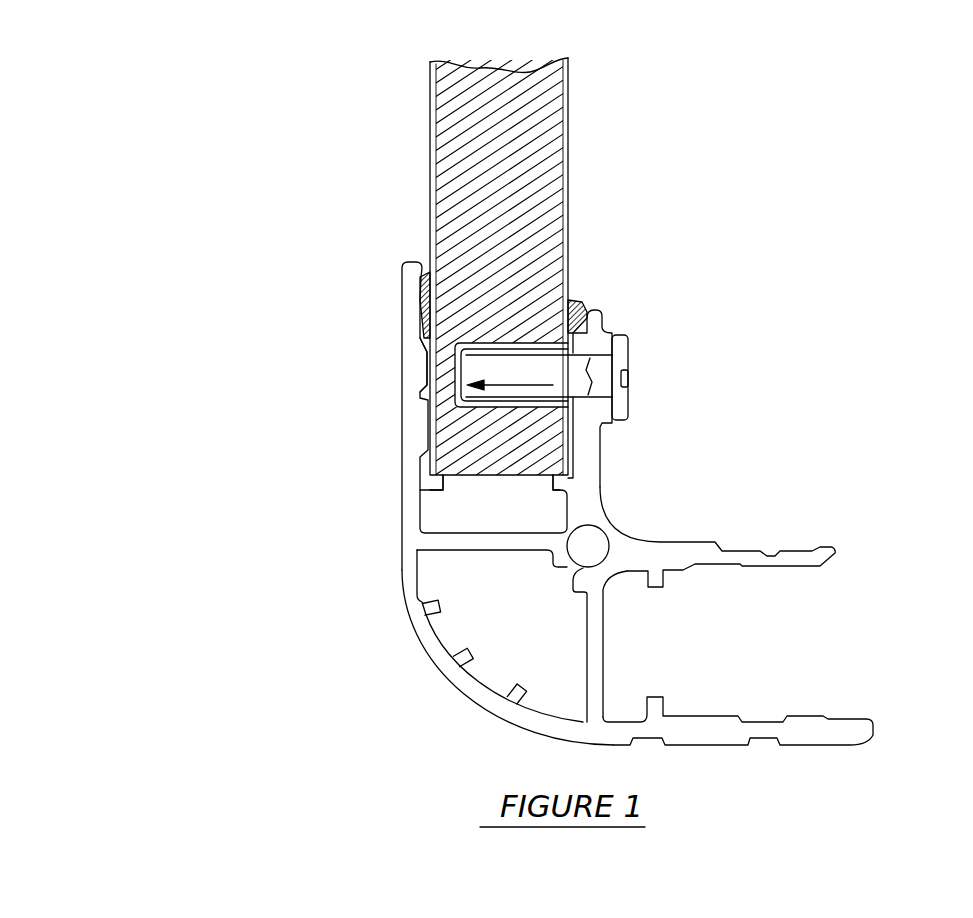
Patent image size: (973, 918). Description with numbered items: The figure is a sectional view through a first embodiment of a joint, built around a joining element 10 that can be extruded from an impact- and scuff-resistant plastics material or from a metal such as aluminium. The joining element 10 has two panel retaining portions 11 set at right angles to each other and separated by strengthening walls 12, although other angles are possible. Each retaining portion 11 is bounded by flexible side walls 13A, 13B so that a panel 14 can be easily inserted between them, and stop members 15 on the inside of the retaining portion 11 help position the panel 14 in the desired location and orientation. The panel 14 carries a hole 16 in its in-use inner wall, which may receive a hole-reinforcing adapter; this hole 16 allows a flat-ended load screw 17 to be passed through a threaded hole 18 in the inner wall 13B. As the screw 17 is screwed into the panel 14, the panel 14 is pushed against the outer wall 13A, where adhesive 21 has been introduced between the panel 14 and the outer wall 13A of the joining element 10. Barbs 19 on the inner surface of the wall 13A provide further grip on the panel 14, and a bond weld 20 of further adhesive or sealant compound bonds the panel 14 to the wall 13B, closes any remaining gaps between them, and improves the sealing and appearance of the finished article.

The joining element 10 is at (382, 670).
The panel retaining portion 11 is at (822, 566).
The strengthening wall 12 is at (602, 673).
The outer wall 13A is at (403, 427).
The inner wall 13B is at (598, 465).
The panel 14 is at (453, 95).
The stop member 15 is at (558, 490).
The hole 16 is at (485, 345).
The load screw 17 is at (630, 350).
The threaded hole 18 is at (590, 352).
The barb 19 is at (410, 343).
The bond weld 20 is at (578, 300).
The adhesive 21 is at (418, 307).